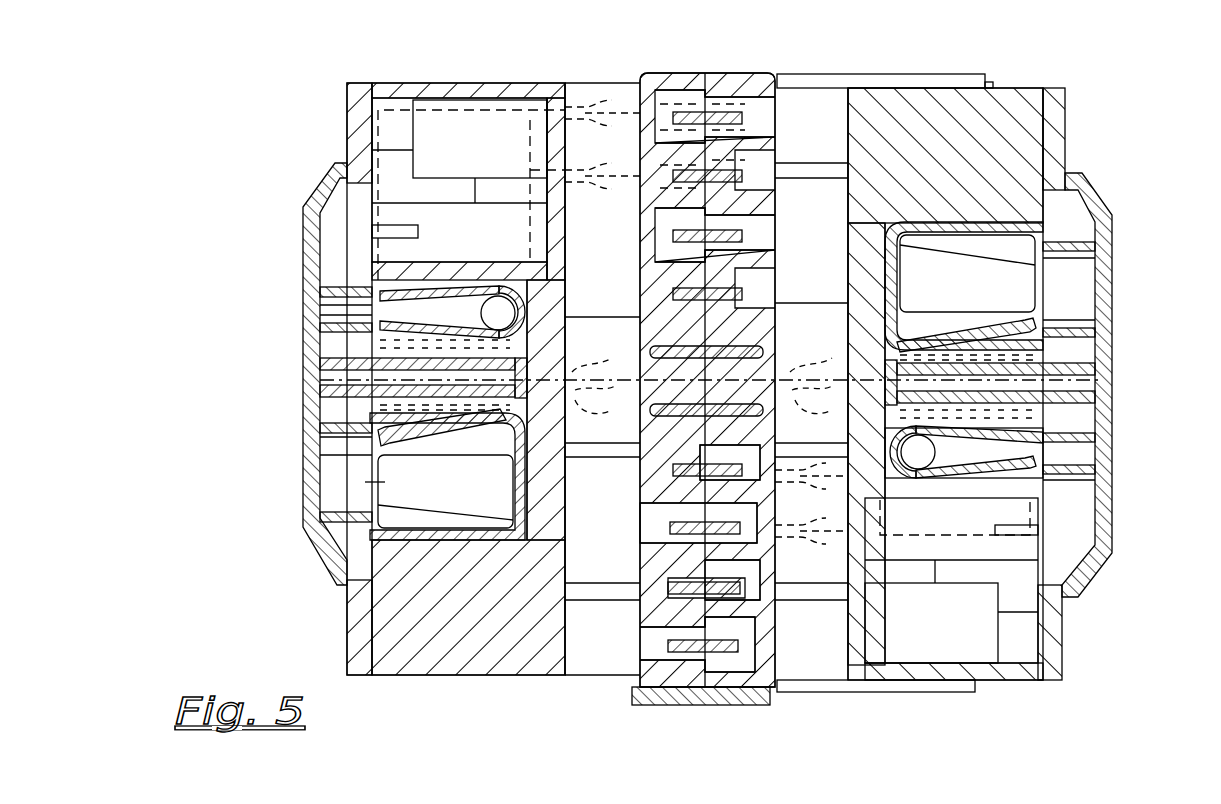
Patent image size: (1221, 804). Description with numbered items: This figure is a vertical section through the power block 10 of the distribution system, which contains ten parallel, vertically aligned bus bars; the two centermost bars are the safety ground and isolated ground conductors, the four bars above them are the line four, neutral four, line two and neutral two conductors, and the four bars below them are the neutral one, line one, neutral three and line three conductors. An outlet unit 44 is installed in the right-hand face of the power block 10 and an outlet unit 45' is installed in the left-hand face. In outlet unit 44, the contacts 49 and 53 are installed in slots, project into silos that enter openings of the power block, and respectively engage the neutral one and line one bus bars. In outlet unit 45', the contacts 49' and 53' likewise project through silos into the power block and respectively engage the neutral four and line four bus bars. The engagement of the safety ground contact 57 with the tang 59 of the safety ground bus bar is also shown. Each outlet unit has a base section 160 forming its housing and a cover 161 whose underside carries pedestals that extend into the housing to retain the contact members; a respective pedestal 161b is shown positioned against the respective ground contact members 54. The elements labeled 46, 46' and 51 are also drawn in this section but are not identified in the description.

The power block 10 is at (714, 60).
The outlet unit 44 is at (1128, 182).
The outlet unit 45' is at (424, 379).
The coil 46 is at (1018, 442).
The coil 46' is at (397, 319).
The contact 49 is at (811, 491).
The contact 49' is at (602, 205).
The contact spring 51 is at (395, 298).
The contact 53 is at (811, 581).
The contact 53' is at (602, 80).
The ground contact member 54 is at (558, 440).
The safety ground contact 57 is at (706, 423).
The tang 59 is at (702, 362).
The base section 160 is at (1018, 108).
The cover 161 is at (312, 245).
The pedestal 161b is at (325, 385).